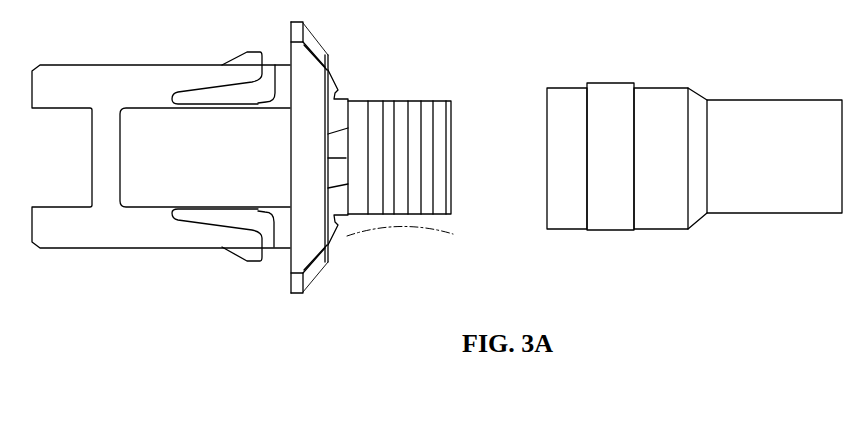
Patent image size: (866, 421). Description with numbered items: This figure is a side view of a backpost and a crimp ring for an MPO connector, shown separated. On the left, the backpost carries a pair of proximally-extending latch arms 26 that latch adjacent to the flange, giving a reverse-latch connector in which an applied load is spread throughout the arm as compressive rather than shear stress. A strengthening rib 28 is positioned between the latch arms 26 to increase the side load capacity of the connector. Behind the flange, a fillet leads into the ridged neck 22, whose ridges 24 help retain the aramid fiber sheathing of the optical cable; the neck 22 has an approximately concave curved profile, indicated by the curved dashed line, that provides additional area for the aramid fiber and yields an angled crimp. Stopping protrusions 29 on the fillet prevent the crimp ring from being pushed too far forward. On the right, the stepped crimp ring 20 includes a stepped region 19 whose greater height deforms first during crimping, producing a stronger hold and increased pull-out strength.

The stepped region 19 is at (612, 218).
The crimp ring 20 is at (748, 195).
The neck 22 is at (432, 142).
The ridges 24 is at (390, 103).
The latch arms 26 is at (178, 78).
The strengthening rib 28 is at (217, 171).
The stopping protrusions 29 is at (333, 87).